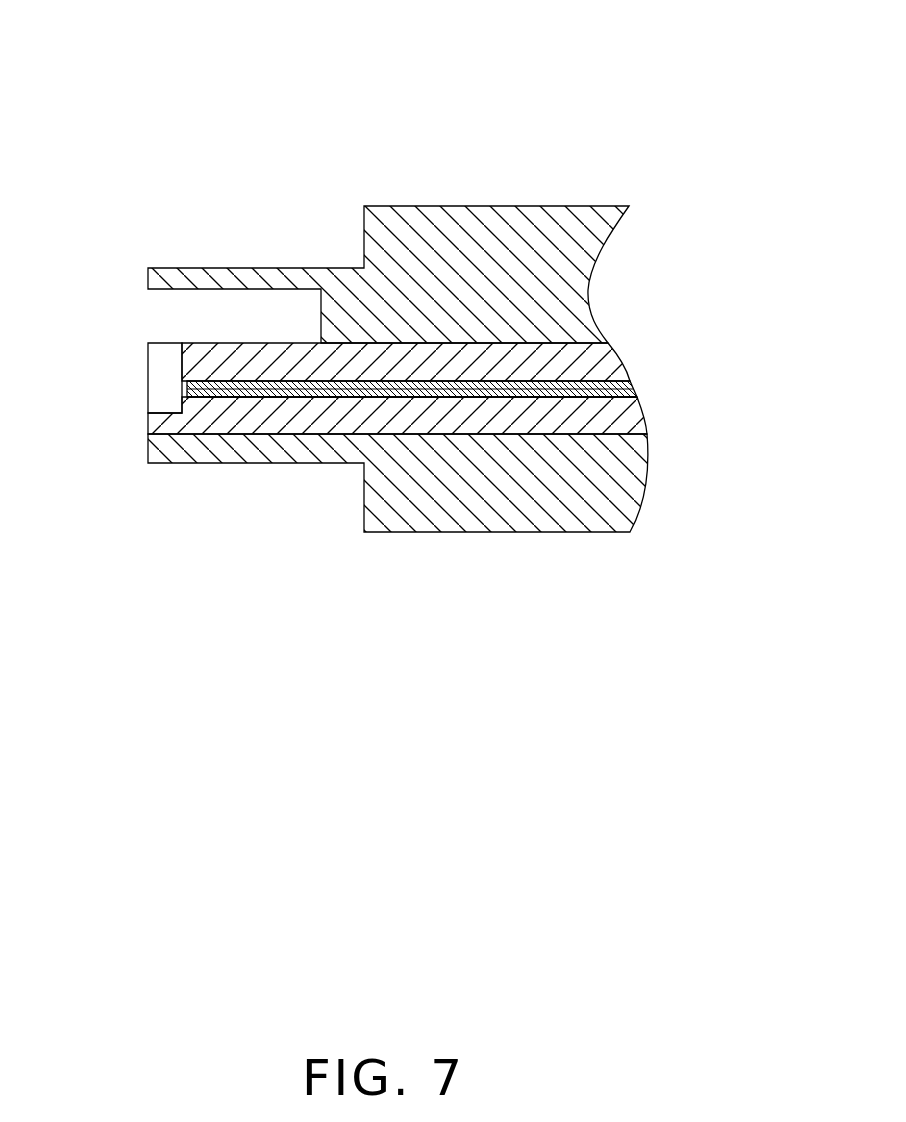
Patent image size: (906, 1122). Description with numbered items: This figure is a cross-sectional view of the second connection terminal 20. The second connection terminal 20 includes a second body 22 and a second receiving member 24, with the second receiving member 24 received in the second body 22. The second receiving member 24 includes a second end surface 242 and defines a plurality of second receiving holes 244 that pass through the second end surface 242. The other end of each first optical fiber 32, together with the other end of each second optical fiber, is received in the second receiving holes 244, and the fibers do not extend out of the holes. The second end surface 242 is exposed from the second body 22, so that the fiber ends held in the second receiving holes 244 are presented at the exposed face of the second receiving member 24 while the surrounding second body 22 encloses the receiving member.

The second connection terminal 20 is at (240, 57).
The second body 22 is at (405, 230).
The second receiving member 24 is at (232, 362).
The second end surface 242 is at (182, 363).
The second receiving holes 244 is at (231, 410).
The first optical fiber 32 is at (630, 393).